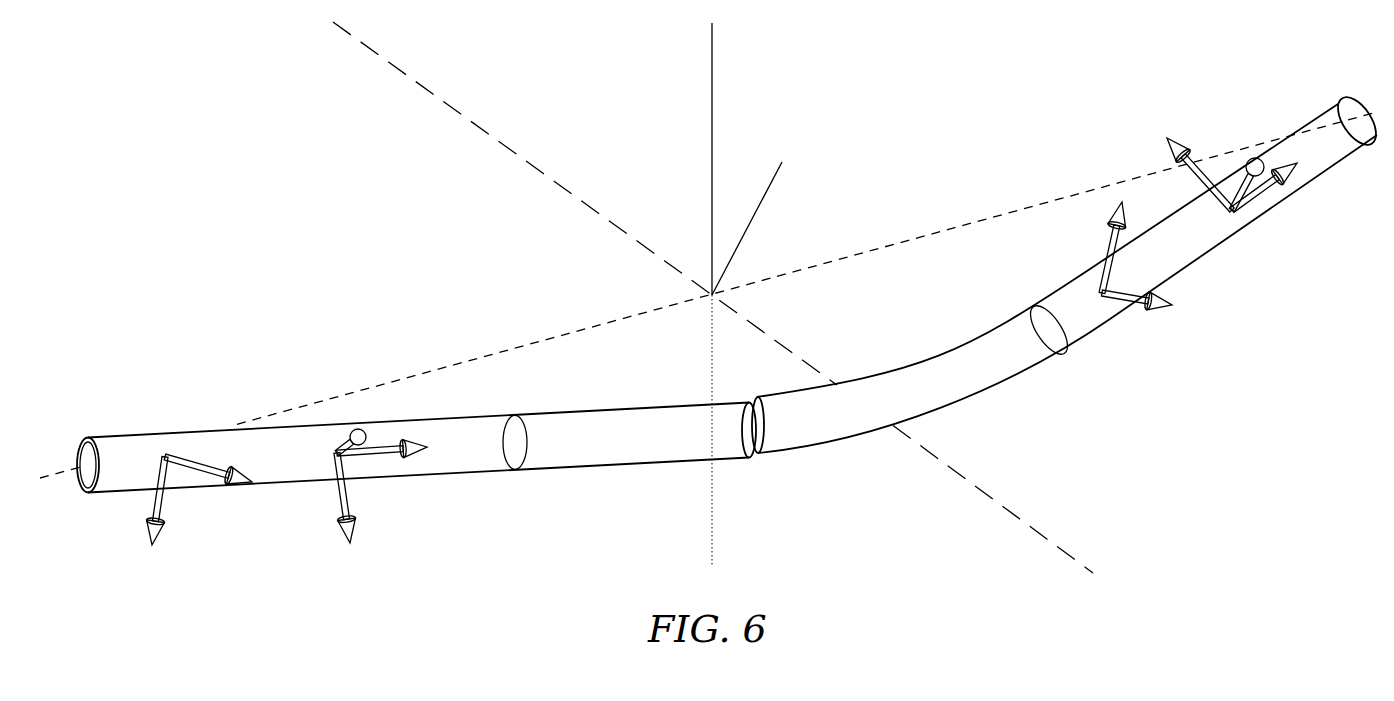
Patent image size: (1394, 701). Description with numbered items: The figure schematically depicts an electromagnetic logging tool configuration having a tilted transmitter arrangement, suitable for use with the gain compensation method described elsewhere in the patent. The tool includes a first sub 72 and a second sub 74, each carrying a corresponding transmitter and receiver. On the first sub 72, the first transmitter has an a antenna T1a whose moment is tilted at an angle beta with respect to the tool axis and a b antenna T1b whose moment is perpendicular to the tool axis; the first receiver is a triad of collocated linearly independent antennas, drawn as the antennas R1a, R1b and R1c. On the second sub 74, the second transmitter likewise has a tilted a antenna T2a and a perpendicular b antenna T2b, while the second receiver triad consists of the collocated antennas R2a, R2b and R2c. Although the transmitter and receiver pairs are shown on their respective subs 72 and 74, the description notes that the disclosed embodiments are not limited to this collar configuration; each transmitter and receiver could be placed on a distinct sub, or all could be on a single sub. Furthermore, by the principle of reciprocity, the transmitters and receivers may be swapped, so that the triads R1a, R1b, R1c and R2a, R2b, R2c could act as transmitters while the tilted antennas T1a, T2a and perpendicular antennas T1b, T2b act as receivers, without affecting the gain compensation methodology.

The first sub 72 is at (1232, 237).
The second sub 74 is at (147, 432).
The a antenna of first transmitter T1a is at (1095, 245).
The b antenna of first transmitter T1b is at (1160, 303).
The a antenna of second transmitter T2a is at (224, 467).
The b antenna of second transmitter T2b is at (147, 518).
The first receiver a antenna R1a is at (1188, 159).
The first receiver b antenna R1b is at (1252, 158).
The first receiver c antenna R1c is at (1282, 172).
The second receiver a antenna R2a is at (365, 428).
The second receiver b antenna R2b is at (354, 516).
The second receiver c antenna R2c is at (405, 445).